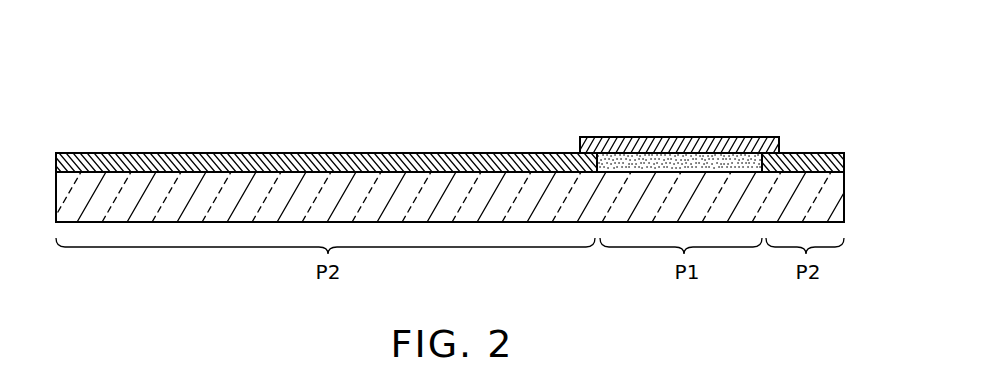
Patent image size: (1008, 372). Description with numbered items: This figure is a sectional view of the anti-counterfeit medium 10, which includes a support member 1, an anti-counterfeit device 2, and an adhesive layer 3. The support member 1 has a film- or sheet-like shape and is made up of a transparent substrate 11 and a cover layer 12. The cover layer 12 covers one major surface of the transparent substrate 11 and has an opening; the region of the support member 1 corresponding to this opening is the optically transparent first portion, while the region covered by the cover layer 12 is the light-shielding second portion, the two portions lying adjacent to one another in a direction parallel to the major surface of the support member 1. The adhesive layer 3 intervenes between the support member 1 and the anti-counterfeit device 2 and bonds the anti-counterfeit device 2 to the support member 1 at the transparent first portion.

The piezoelectric device 10 is at (148, 97).
The support member 1 is at (289, 148).
The anti-counterfeit device 2 is at (661, 138).
The adhesive layer 3 is at (729, 162).
The transparent substrate 11 is at (826, 193).
The cover layer 12 is at (815, 155).